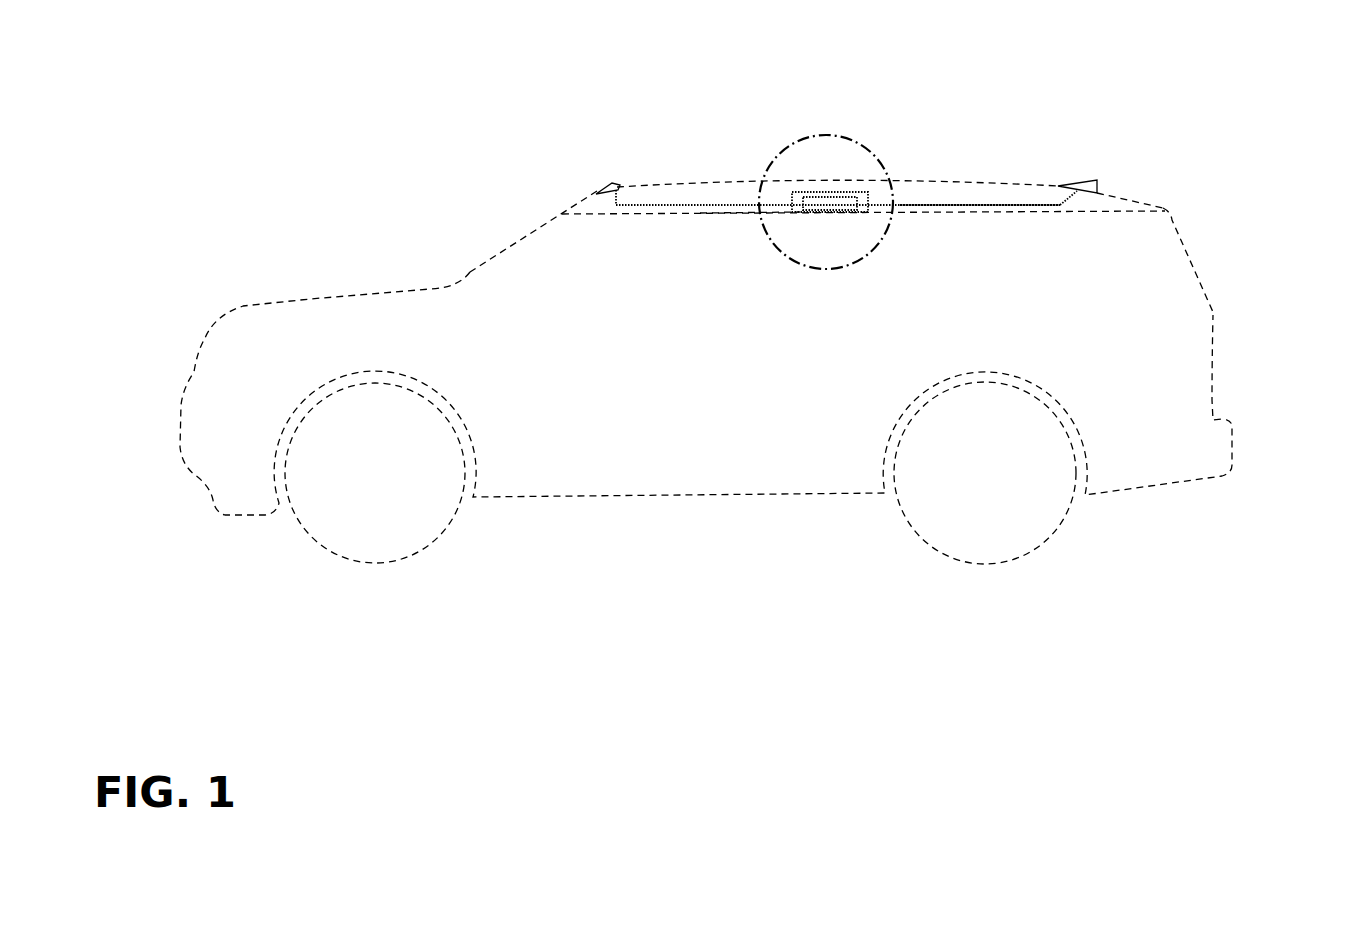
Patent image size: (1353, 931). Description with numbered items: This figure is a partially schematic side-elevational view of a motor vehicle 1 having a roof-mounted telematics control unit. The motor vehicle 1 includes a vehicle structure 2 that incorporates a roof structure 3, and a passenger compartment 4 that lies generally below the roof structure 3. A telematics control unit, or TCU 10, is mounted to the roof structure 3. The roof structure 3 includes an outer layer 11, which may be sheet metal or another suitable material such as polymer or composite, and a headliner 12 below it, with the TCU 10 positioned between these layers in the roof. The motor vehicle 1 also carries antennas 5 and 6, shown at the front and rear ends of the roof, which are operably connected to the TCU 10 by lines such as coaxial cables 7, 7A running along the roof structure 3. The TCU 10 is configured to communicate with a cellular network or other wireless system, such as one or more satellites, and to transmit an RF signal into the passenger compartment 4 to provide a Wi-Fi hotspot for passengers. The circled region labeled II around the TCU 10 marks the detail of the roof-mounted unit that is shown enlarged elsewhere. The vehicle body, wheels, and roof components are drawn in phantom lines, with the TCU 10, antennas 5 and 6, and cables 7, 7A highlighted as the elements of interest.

The motor vehicle 1 is at (1168, 190).
The vehicle structure 2 is at (1213, 312).
The roof structure 3 is at (644, 183).
The passenger compartment 4 is at (607, 260).
The antenna 5 is at (606, 186).
The antenna 6 is at (1091, 182).
The coaxial cable 7 is at (685, 204).
The coaxial cable 7A is at (978, 204).
The telematics control unit (TCU) 10 is at (838, 204).
The outer layer 11 is at (657, 187).
The headliner 12 is at (743, 213).
The detail view II is at (790, 150).